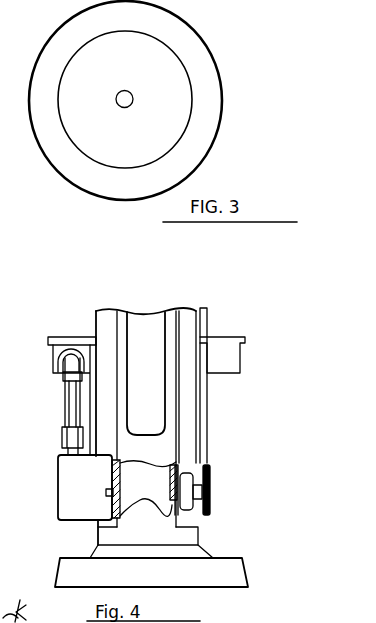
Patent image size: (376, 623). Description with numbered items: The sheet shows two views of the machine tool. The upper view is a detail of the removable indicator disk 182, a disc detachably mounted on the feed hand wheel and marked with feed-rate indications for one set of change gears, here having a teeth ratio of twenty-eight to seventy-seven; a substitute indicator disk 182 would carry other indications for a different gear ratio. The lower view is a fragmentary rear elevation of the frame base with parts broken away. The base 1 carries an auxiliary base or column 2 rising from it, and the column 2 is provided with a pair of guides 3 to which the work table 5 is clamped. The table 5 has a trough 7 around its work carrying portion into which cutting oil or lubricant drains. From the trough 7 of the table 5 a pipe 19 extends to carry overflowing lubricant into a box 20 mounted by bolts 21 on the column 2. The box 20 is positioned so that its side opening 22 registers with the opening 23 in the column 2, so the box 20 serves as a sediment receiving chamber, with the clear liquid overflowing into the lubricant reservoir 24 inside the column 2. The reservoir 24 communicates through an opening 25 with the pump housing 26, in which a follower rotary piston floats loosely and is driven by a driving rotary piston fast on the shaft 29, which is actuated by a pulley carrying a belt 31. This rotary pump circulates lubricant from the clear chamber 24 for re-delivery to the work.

In FIG. 3, the indicator disk 182 is at (222, 80).
In FIG. 4, the base 1 is at (238, 560).
In FIG. 4, the column 2 is at (130, 313).
In FIG. 4, the guides 3 is at (97, 322).
In FIG. 4, the work table 5 is at (73, 336).
In FIG. 4, the trough 7 is at (53, 357).
In FIG. 4, the pipe 19 is at (64, 402).
In FIG. 4, the box 20 is at (57, 463).
In FIG. 4, the bolts 21 is at (106, 494).
In FIG. 4, the side opening 22 is at (113, 470).
In FIG. 4, the opening 23 is at (120, 462).
In FIG. 4, the lubricant reservoir 24 is at (142, 497).
In FIG. 4, the opening 25 is at (183, 470).
In FIG. 4, the pump housing 26 is at (197, 505).
In FIG. 4, the shaft 29 is at (211, 493).
In FIG. 4, the belt 31 is at (208, 437).